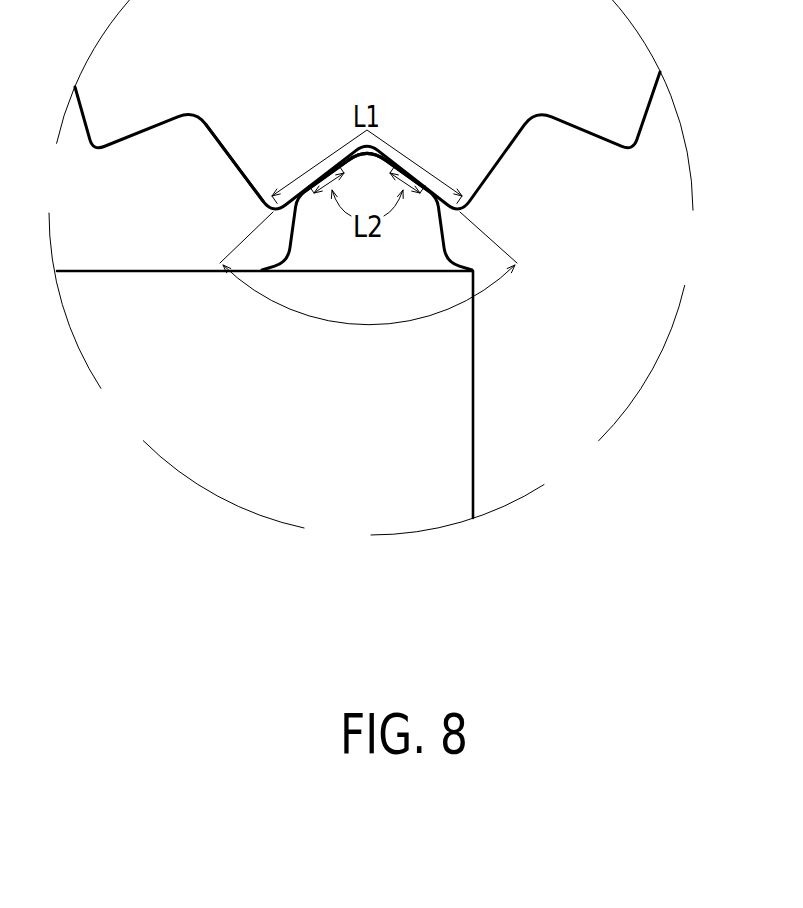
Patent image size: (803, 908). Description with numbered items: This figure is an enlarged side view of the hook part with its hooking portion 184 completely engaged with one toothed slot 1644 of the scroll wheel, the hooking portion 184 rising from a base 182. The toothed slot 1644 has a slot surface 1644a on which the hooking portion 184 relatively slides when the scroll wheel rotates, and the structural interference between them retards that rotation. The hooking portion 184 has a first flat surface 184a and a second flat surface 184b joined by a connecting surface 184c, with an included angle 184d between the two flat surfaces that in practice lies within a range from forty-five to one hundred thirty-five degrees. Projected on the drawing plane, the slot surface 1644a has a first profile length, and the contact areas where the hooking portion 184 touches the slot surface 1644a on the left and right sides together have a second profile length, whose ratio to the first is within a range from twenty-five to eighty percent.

The base body 182 is at (435, 424).
The hooking portion 184 is at (423, 233).
The first flat surface 184a is at (320, 170).
The second flat surface 184b is at (414, 172).
The connecting surface 184c is at (375, 148).
The included angle 184d is at (368, 268).
The toothed slot 1644 is at (545, 167).
The slot surface 1644a is at (238, 167).